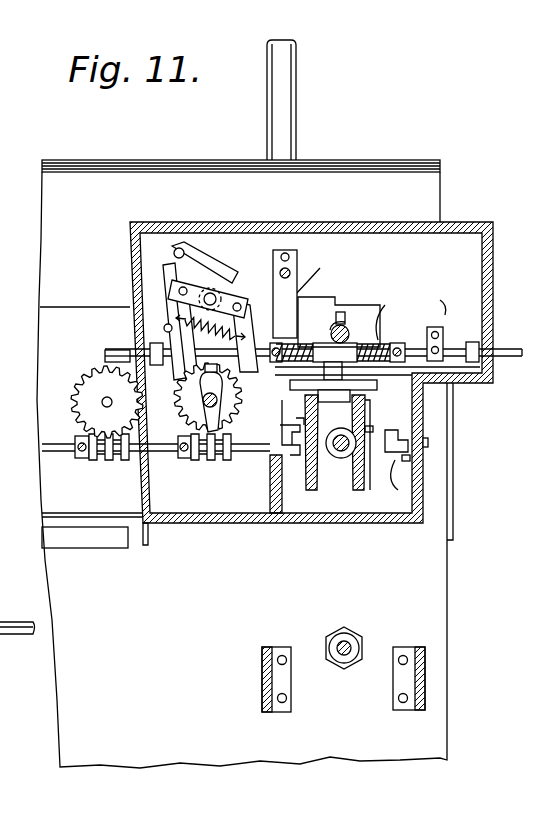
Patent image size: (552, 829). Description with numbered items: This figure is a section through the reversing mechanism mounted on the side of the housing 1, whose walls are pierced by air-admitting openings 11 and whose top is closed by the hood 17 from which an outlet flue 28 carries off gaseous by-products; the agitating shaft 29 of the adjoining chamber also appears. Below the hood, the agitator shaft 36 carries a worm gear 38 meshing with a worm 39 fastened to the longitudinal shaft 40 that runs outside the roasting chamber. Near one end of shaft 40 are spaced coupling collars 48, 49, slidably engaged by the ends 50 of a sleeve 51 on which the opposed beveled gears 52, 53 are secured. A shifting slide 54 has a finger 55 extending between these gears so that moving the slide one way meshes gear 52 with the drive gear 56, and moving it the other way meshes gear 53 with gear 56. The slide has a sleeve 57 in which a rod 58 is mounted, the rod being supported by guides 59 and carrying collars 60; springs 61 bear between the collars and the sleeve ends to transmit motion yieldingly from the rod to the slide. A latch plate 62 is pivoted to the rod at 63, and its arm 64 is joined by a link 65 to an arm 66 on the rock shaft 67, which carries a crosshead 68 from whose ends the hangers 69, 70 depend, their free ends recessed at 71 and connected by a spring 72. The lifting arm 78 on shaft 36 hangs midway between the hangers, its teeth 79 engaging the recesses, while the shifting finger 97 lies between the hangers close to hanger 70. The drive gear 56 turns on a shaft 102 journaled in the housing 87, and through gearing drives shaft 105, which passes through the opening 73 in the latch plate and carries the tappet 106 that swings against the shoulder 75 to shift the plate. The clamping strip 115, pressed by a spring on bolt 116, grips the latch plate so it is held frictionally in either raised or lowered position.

The housing 1 is at (80, 730).
The openings 11 is at (75, 540).
The hood 17 is at (388, 165).
The outlet flue 28 is at (286, 97).
The shaft 29 is at (344, 660).
The agitator shaft 36 is at (100, 396).
The worm gear 38 is at (85, 412).
The worm 39 is at (95, 456).
The longitudinal shaft 40 is at (48, 447).
The coupling collar 48 is at (330, 445).
The coupling collar 49 is at (400, 470).
The sleeve ends 50 is at (284, 440).
The sleeve 51 is at (357, 470).
The beveled gear 52 is at (330, 480).
The beveled gear 53 is at (368, 480).
The shifting slide 54 is at (444, 300).
The finger 55 is at (355, 408).
The drive gear 56 is at (370, 520).
The sleeve 57 is at (330, 343).
The rod 58 is at (495, 350).
The guides 59 is at (112, 357).
The collars 60 is at (290, 300).
The springs 61 is at (395, 343).
The latch plate 62 is at (352, 328).
The pivotal connection 63 is at (442, 330).
The arm 64 is at (232, 300).
The link 65 is at (168, 275).
The arm 66 is at (203, 262).
The rock shaft 67 is at (215, 288).
The crosshead 68 is at (180, 275).
The hanger 69 is at (150, 350).
The hanger 70 is at (247, 302).
The recesses 71 is at (110, 404).
The spring 72 is at (180, 325).
The opening 73 is at (385, 320).
The shoulder 75 is at (340, 320).
The lifting arm 78 is at (190, 520).
The teeth 79 is at (213, 432).
The housing 87 is at (268, 470).
The shifting finger 97 is at (152, 352).
The shaft 102 is at (340, 458).
The shaft 105 is at (372, 300).
The tappet 106 is at (345, 320).
The clamping strip 115 is at (287, 270).
The bolt 116 is at (305, 300).